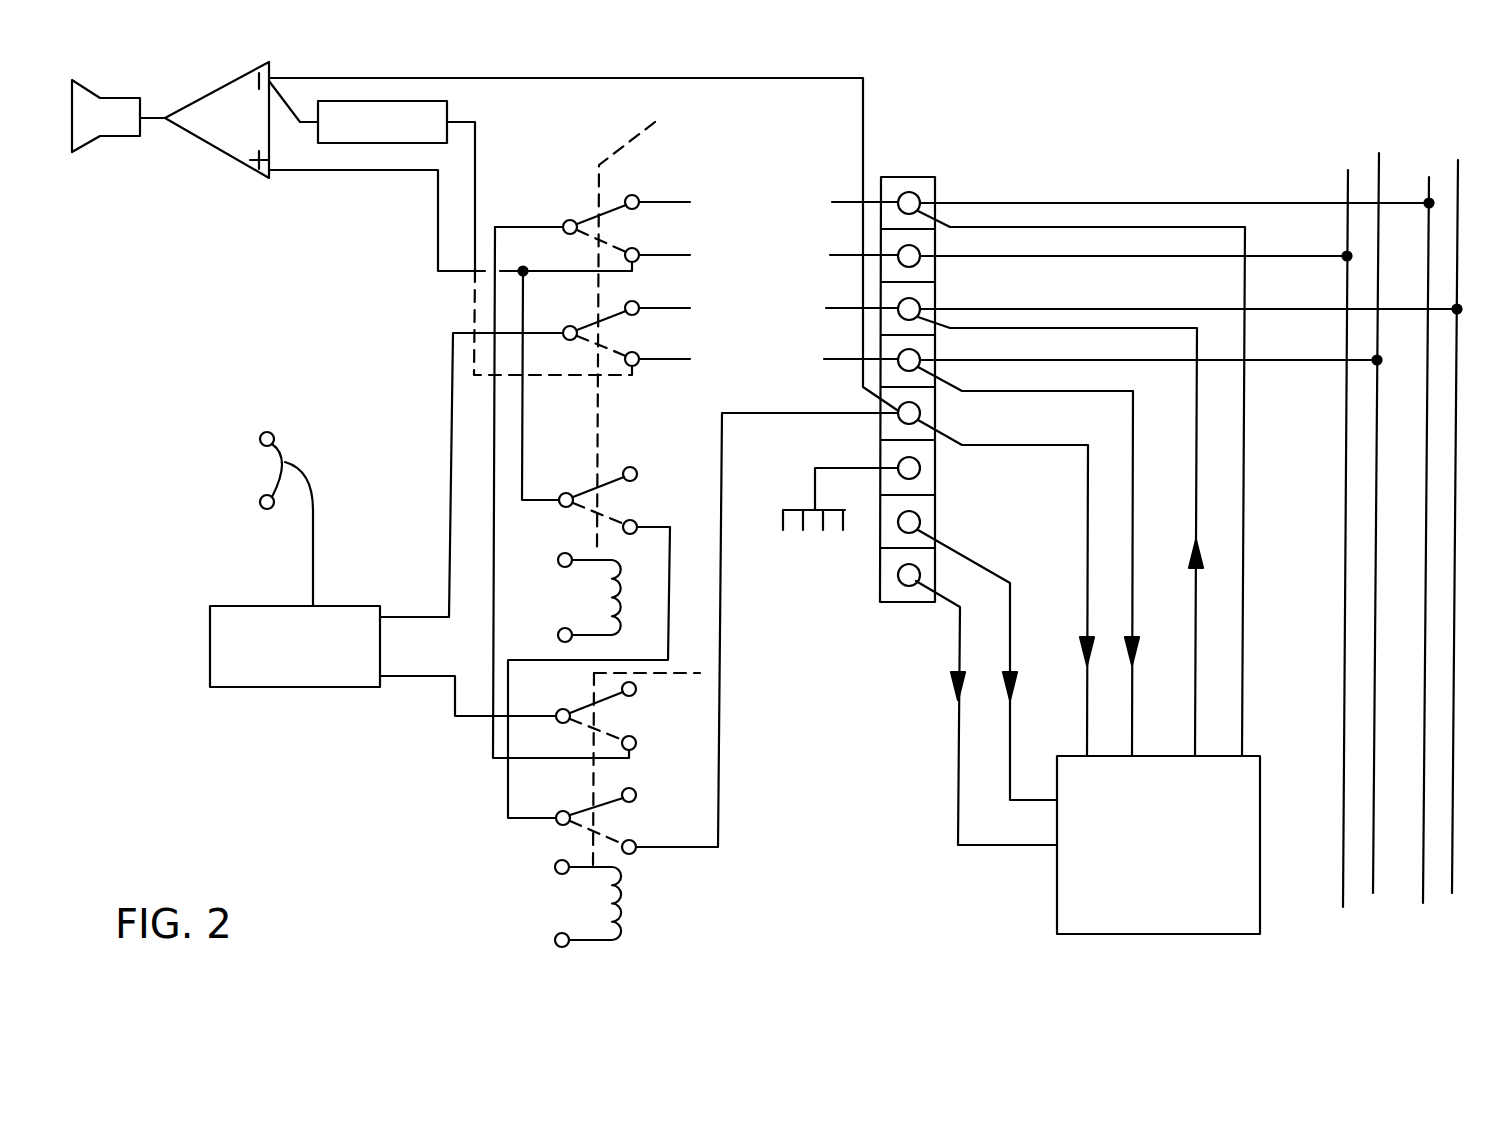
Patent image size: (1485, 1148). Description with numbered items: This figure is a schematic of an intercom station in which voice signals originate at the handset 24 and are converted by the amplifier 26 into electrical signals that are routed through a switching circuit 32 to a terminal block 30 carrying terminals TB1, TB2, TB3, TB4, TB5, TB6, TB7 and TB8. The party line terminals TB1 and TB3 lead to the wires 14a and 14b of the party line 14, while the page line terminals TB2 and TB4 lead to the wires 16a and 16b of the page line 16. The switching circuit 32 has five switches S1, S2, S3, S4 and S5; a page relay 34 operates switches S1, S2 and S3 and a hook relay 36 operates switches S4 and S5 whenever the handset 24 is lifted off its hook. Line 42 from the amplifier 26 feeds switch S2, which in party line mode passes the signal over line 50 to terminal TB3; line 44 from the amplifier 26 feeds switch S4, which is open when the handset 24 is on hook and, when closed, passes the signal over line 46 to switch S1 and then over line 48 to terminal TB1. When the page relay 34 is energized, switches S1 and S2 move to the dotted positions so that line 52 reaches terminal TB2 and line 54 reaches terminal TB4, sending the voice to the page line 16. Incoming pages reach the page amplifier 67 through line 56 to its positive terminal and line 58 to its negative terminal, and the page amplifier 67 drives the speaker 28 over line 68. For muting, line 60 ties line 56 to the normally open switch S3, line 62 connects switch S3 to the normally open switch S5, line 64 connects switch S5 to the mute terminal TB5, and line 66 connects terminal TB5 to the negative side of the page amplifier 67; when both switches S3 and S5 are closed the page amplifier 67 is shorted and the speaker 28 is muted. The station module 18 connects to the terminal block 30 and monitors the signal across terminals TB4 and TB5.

The party line 14 is at (1196, 530).
The wire of the party line 14a is at (1452, 870).
The wire of the party line 14b is at (1423, 885).
The page line 16 is at (1152, 524).
The wire of the page line 16a is at (1373, 875).
The wire of the page line 16b is at (1343, 858).
The station module 18 is at (1171, 857).
The handset 24 is at (287, 458).
The amplifier 26 is at (311, 667).
The speaker 28 is at (112, 135).
The terminal block 30 is at (948, 390).
The switching circuit 32 is at (523, 534).
The page relay 34 is at (600, 632).
The hook relay 36 is at (595, 937).
The line 42 is at (452, 473).
The line 44 is at (428, 675).
The line 46 is at (495, 553).
The line 48 is at (856, 199).
The line 50 is at (856, 305).
The line 52 is at (856, 252).
The line 54 is at (856, 357).
The line 56 is at (437, 203).
The line 58 is at (478, 157).
The line 60 is at (522, 438).
The line 62 is at (670, 628).
The line 64 is at (722, 742).
The line 66 is at (793, 82).
The page amplifier 67 is at (215, 153).
The line 68 is at (155, 118).
The switch S1 is at (610, 198).
The switch S2 is at (640, 372).
The switch S3 is at (622, 458).
The switch S4 is at (630, 715).
The switch S5 is at (635, 858).
The party line terminal TB1 is at (935, 185).
The page line terminal TB2 is at (938, 243).
The party line terminal TB3 is at (938, 292).
The page line terminal TB4 is at (938, 343).
The mute terminal TB5 is at (935, 415).
The terminal TB6 is at (935, 468).
The terminal TB7 is at (935, 522).
The terminal TB8 is at (897, 602).